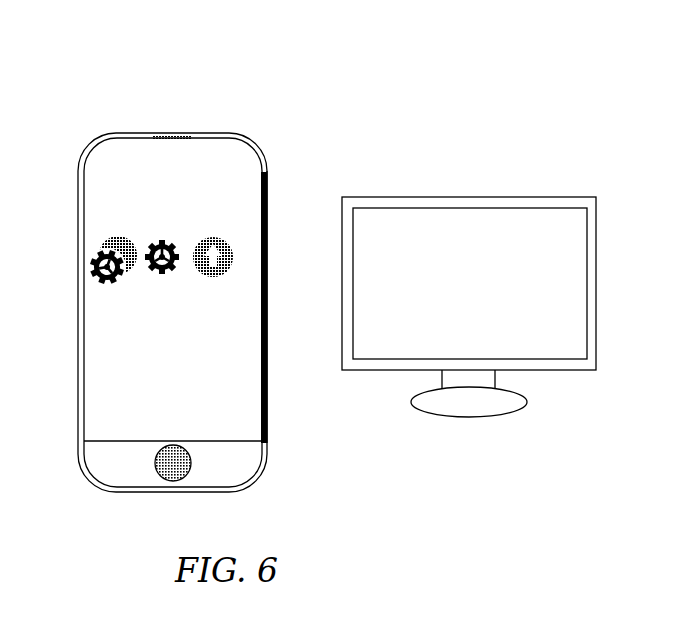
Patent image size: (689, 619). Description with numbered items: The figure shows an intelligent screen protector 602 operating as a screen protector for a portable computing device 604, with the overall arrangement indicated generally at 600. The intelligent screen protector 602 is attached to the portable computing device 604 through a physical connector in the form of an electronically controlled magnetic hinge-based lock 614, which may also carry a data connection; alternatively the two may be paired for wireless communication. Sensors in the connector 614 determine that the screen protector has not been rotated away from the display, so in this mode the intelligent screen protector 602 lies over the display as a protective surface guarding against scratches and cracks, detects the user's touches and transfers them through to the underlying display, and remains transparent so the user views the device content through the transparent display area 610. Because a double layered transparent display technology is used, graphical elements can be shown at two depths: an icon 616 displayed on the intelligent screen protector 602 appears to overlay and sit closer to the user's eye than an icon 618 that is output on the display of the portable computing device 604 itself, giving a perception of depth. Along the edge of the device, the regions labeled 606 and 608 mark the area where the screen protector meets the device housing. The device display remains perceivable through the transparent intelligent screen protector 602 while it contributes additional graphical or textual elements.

The user interface environment 600 is at (309, 258).
The intelligent screen protector 602 is at (181, 284).
The portable computing device 604 is at (156, 290).
The display edge 606 is at (304, 290).
The side indicator region 608 is at (301, 202).
The transparent display area 610 is at (142, 305).
The electronically controlled magnetic hinge-based lock 614 is at (228, 307).
The icon 616 is at (75, 265).
The icon 618 is at (85, 241).